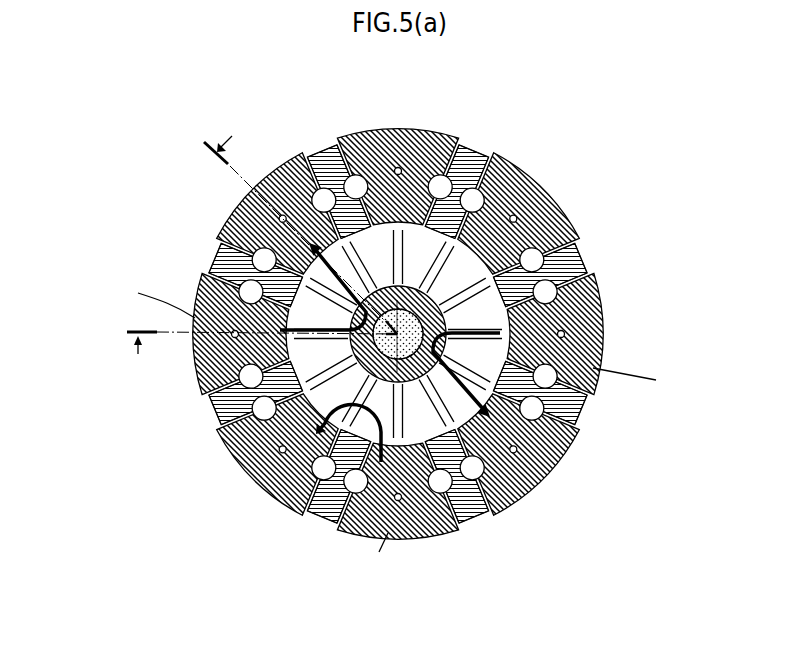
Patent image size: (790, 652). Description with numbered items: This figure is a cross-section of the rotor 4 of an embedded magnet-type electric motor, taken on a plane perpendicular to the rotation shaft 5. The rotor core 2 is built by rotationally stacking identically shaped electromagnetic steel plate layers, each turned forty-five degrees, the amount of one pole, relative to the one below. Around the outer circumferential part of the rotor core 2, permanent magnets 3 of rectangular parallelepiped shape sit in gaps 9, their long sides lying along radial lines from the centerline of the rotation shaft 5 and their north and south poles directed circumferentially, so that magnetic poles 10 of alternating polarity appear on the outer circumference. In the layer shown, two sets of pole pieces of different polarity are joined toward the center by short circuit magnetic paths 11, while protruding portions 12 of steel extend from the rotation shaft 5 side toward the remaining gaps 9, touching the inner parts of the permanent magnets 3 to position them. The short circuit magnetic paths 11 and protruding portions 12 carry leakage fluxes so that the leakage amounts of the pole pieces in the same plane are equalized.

The rotor core 2 is at (270, 490).
The permanent magnet 3 is at (583, 270).
The rotor 4 is at (69, 80).
The rotation shaft 5 is at (470, 462).
The gap 9 is at (583, 273).
The magnetic pole 10 is at (402, 131).
The short circuit magnetic path 11 is at (322, 170).
The protruding portion 12 is at (500, 184).